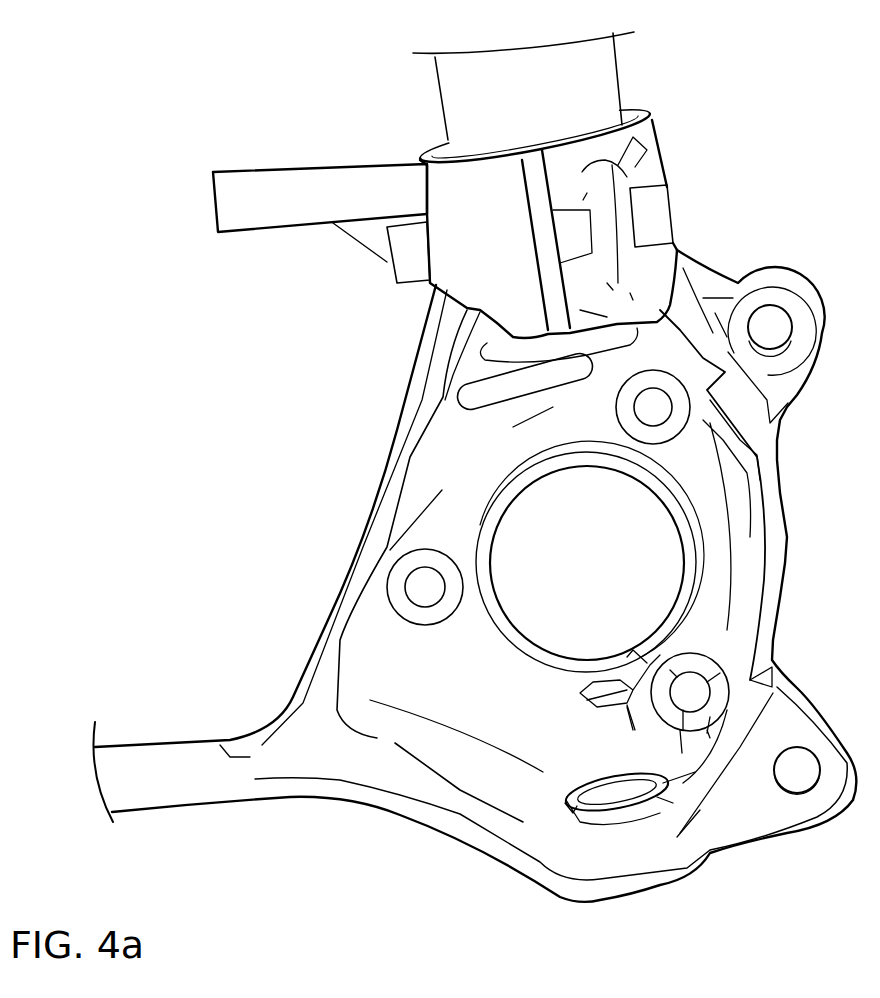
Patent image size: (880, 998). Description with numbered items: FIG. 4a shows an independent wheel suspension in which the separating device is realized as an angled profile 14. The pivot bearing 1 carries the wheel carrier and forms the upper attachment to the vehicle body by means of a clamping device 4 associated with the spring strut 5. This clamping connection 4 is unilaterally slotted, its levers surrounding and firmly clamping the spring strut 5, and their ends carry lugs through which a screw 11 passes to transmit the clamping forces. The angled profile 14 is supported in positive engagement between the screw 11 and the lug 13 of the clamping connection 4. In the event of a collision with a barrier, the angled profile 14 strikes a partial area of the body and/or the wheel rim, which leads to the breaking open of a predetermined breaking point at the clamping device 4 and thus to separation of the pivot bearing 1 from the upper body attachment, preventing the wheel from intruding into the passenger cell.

The pivot bearing 1 is at (722, 558).
The clamping device 4 is at (672, 118).
The spring strut 5 is at (595, 70).
The screw 11 is at (678, 213).
The lug 13 is at (430, 312).
The angled profile 14 is at (327, 184).